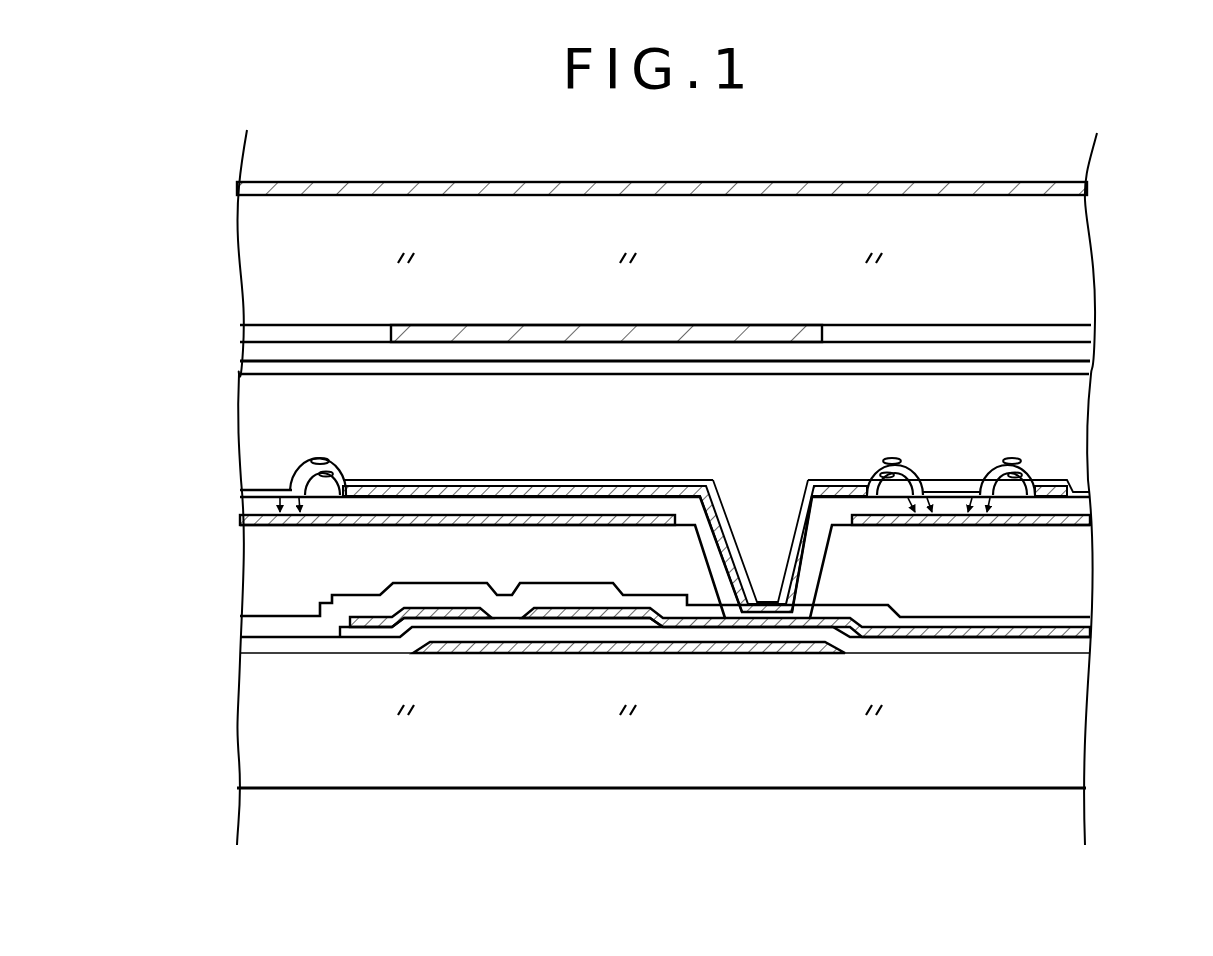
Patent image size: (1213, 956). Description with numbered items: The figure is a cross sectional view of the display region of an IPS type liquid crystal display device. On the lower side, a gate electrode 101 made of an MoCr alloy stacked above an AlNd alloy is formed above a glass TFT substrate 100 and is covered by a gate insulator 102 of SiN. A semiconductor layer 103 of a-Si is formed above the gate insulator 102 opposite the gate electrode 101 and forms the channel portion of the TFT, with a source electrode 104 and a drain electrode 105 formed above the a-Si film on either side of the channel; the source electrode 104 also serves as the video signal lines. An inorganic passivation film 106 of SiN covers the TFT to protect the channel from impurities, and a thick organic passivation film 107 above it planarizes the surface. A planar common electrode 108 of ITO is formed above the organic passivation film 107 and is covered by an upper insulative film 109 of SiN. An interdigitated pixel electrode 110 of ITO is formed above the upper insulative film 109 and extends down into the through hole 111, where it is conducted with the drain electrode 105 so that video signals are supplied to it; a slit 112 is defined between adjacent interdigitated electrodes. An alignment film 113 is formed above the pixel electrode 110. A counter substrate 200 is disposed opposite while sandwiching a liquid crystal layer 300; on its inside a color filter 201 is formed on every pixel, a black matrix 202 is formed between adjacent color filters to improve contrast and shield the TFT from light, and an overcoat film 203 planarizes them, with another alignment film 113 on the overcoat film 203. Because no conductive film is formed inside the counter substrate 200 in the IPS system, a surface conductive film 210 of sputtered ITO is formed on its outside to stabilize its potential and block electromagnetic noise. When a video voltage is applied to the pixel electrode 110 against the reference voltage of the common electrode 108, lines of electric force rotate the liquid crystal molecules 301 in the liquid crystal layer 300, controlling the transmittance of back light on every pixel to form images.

The TFT substrate 100 is at (325, 735).
The gate electrode 101 is at (500, 655).
The gate insulator 102 is at (258, 646).
The semiconductor layer 103 is at (578, 622).
The source electrode 104 is at (437, 618).
The drain electrode 105 is at (645, 622).
The inorganic passivation film 106 is at (255, 621).
The organic passivation film 107 is at (255, 569).
The common electrode 108 is at (250, 519).
The upper insulative film 109 is at (245, 497).
The pixel electrode 110 is at (630, 480).
The through hole 111 is at (765, 612).
The slit 112 is at (945, 488).
The alignment film 113 is at (1065, 369).
The counter substrate 200 is at (1062, 265).
The color filter 201 is at (1065, 333).
The black matrix 202 is at (790, 333).
The overcoat film 203 is at (1062, 350).
The surface conductive film 210 is at (975, 186).
The liquid crystal layer 300 is at (1065, 388).
The liquid crystal molecules 301 is at (1010, 457).